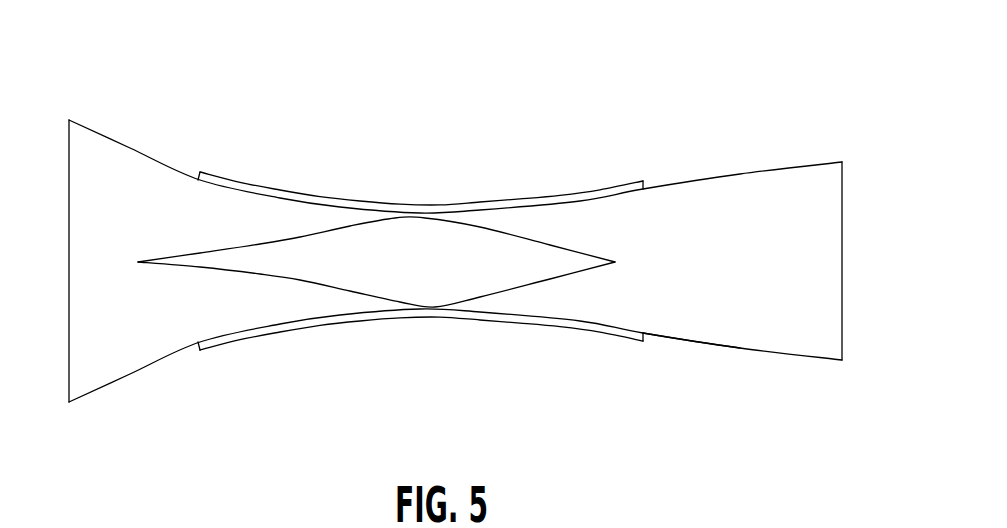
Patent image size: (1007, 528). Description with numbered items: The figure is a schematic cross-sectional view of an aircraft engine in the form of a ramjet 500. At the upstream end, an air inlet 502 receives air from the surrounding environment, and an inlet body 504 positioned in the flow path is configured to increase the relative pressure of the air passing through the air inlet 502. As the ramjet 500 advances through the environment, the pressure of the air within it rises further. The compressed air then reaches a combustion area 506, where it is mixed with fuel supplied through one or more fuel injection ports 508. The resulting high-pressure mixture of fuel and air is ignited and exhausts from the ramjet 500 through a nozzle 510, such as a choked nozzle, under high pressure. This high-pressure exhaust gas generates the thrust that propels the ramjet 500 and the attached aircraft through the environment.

The ramjet 500 is at (762, 109).
The air inlet 502 is at (189, 220).
The inlet body 504 is at (378, 292).
The combustion area 506 is at (480, 211).
The fuel injection ports 508 is at (468, 312).
The nozzle 510 is at (617, 313).